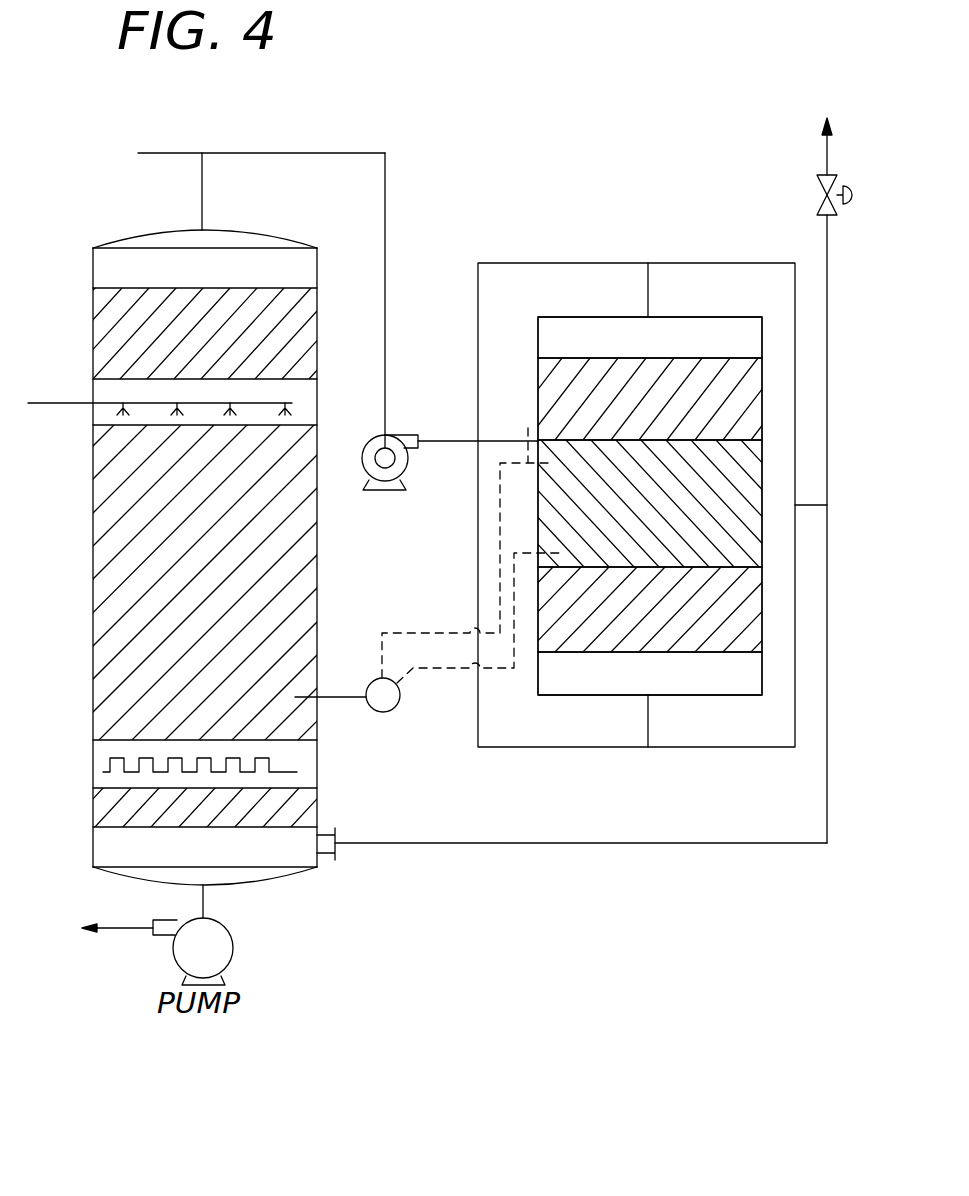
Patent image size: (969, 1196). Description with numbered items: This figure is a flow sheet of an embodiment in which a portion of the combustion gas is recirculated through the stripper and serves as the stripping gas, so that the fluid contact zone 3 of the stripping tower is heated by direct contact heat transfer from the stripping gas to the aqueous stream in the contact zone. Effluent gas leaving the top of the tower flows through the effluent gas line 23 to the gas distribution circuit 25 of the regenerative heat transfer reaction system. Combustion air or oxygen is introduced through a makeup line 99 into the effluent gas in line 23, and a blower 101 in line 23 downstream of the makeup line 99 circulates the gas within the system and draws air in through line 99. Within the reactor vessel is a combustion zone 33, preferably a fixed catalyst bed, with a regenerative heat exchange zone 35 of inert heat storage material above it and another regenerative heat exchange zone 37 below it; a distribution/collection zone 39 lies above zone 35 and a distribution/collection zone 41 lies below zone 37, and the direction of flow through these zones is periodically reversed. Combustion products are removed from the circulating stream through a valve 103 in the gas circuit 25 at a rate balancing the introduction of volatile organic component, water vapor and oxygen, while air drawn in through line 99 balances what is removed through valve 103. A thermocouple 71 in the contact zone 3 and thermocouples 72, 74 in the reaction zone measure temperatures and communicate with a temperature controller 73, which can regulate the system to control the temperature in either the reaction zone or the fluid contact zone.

The fluid contact zone 3 is at (113, 542).
The effluent gas line 23 is at (385, 197).
The gas distribution circuit 25 is at (827, 392).
The combustion zone 33 is at (743, 476).
The regenerative heat exchange zone 35 is at (558, 392).
The regenerative heat exchange zone 37 is at (577, 642).
The distribution/collection zone 39 is at (558, 332).
The distribution/collection zone 41 is at (700, 682).
The thermocouple 71 is at (303, 690).
The thermocouple 72 is at (528, 430).
The temperature controller 73 is at (390, 712).
The thermocouple 74 is at (442, 670).
The makeup line 99 is at (150, 153).
The blower 101 is at (398, 435).
The valve 103 is at (815, 190).